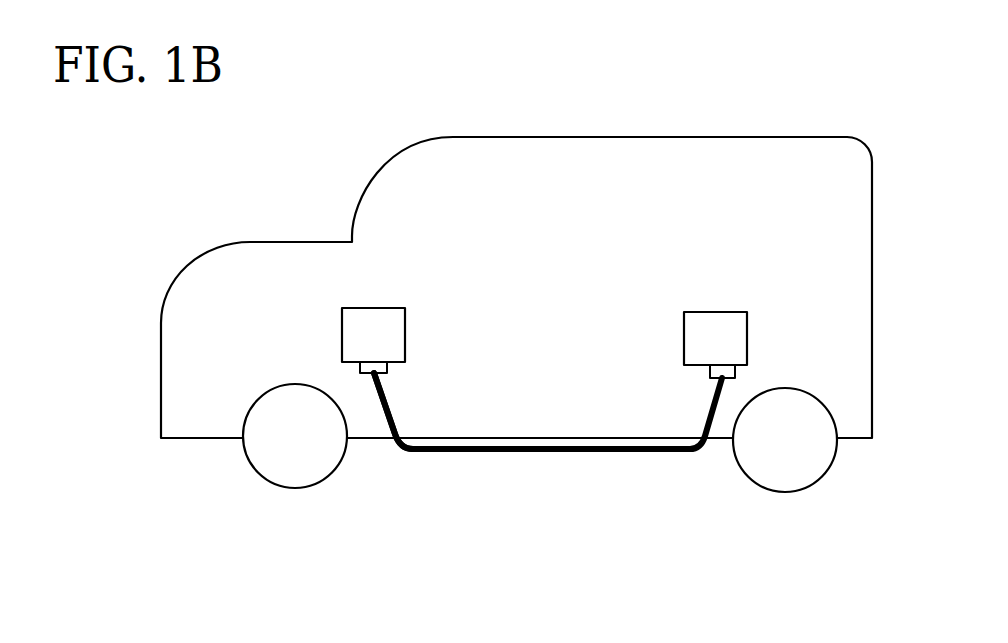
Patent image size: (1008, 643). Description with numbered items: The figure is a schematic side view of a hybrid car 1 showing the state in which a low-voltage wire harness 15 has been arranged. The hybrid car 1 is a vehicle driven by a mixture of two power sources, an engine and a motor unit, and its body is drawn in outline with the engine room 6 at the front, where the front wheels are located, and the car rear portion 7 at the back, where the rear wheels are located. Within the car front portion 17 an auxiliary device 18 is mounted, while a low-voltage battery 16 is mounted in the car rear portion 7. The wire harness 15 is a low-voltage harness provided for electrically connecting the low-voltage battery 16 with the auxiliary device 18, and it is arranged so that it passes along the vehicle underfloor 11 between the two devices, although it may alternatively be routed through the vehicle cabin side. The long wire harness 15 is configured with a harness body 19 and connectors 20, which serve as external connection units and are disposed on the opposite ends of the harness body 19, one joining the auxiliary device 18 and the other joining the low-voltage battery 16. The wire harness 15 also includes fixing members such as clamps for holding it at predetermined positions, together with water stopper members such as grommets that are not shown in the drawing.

The hybrid car 1 is at (695, 133).
The engine room 6 is at (180, 404).
The car rear portion 7 is at (848, 400).
The vehicle underfloor 11 is at (632, 442).
The wire harness 15 is at (441, 456).
The low-voltage battery 16 is at (718, 317).
The car front portion 17 is at (320, 257).
The auxiliary device 18 is at (388, 317).
The harness body 19 is at (400, 421).
The connectors 20 is at (387, 367).